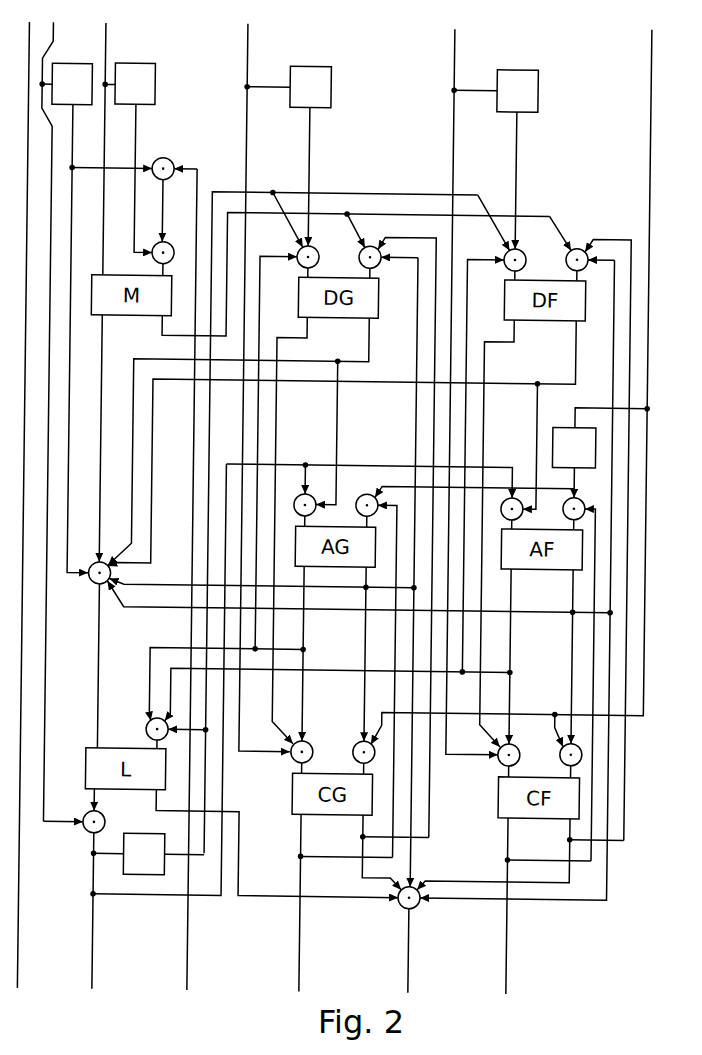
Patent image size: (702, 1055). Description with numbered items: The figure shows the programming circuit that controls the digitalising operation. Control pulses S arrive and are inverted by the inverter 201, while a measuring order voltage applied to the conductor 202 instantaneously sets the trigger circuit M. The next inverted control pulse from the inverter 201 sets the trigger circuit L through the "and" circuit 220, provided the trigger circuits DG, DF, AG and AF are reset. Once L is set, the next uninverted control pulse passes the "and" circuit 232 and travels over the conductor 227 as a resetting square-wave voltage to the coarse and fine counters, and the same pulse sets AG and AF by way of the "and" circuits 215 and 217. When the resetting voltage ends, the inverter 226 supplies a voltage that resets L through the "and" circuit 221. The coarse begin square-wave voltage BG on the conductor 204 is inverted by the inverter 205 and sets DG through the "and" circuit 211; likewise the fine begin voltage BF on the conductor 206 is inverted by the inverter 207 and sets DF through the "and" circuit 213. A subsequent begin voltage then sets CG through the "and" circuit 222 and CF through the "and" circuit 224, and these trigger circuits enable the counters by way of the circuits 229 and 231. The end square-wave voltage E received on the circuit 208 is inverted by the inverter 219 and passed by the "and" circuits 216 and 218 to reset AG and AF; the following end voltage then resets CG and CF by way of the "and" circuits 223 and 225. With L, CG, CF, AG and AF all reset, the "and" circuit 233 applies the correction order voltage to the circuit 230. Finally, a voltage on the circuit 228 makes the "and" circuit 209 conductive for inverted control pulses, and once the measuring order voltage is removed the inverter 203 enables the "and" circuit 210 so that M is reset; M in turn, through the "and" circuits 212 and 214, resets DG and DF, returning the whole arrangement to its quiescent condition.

The inverter 201 is at (70, 317).
The conductor 202 is at (120, 292).
The inverter 203 is at (134, 157).
The conductor 204 is at (267, 388).
The inverter 205 is at (309, 156).
The conductor 206 is at (475, 392).
The inverter 207 is at (516, 159).
The circuit 208 is at (513, 386).
The "and" circuit 209 is at (132, 191).
The "and" circuit 210 is at (149, 259).
The "and" circuit 211 is at (303, 444).
The "and" circuit 212 is at (380, 562).
The "and" circuit 213 is at (510, 456).
The "and" circuit 214 is at (525, 568).
The "and" circuit 215 is at (322, 495).
The "and" circuit 216 is at (359, 497).
The "and" circuit 217 is at (390, 498).
The "and" circuit 218 is at (560, 674).
The inverter 219 is at (574, 463).
The "and" circuit 220 is at (237, 656).
The "and" circuit 221 is at (142, 733).
The "and" circuit 222 is at (319, 750).
The "and" circuit 223 is at (350, 759).
The "and" circuit 224 is at (525, 754).
The "and" circuit 225 is at (557, 761).
The inverter 226 is at (148, 854).
The conductor 227 is at (109, 911).
The circuit 228 is at (209, 579).
The circuit 229 is at (319, 902).
The circuit 230 is at (426, 951).
The circuit 231 is at (525, 906).
The "and" circuit 232 is at (91, 821).
The "and" circuit 233 is at (424, 908).